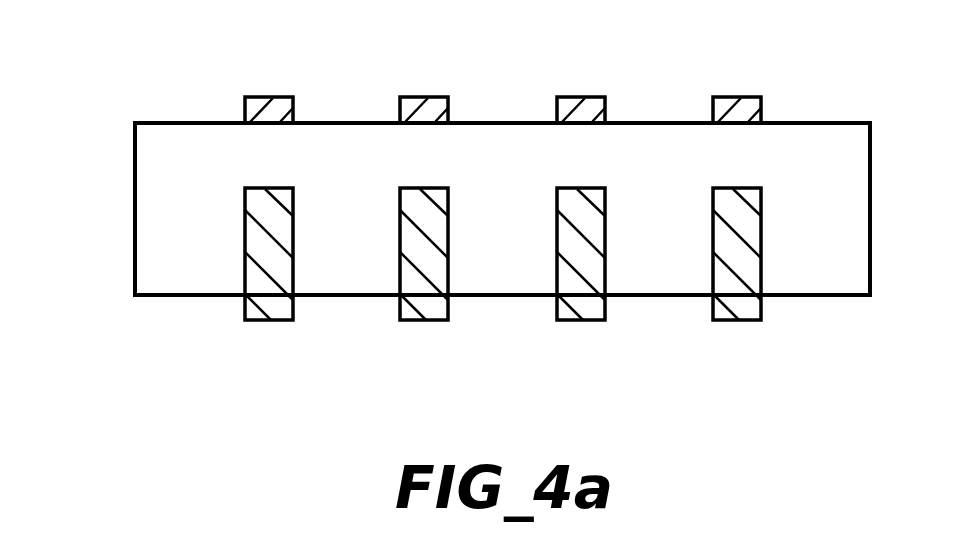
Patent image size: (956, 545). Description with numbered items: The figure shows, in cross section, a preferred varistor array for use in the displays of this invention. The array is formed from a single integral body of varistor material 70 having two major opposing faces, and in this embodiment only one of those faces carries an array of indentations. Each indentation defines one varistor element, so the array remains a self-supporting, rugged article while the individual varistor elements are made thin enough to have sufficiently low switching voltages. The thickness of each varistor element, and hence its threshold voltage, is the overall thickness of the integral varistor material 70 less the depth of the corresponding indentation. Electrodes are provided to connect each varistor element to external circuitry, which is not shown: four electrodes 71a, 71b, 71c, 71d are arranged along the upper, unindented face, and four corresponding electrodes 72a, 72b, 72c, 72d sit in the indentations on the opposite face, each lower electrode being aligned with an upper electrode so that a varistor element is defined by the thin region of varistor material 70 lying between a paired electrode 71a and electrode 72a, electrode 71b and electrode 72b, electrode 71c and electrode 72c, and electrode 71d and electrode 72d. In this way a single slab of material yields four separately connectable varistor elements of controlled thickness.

The integral varistor material 70 is at (124, 230).
The electrode 71a is at (276, 103).
The electrode 71b is at (431, 103).
The electrode 71c is at (586, 103).
The electrode 71d is at (742, 103).
The electrode 72a is at (268, 305).
The electrode 72b is at (423, 305).
The electrode 72c is at (580, 305).
The electrode 72d is at (736, 305).